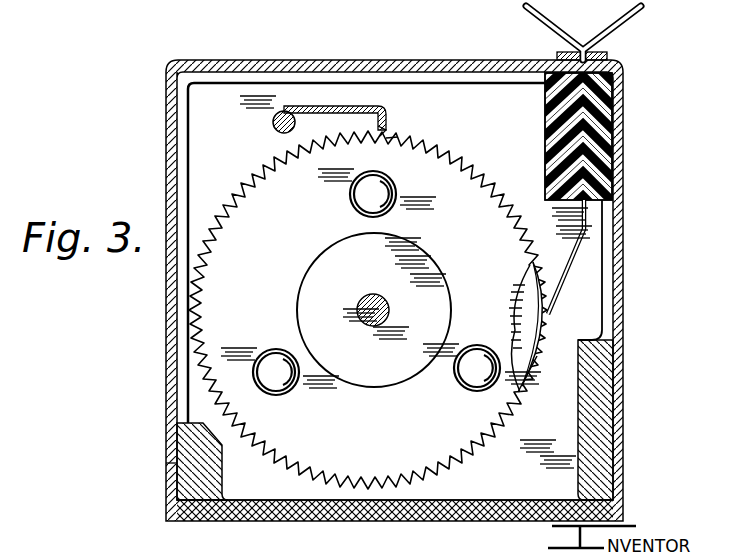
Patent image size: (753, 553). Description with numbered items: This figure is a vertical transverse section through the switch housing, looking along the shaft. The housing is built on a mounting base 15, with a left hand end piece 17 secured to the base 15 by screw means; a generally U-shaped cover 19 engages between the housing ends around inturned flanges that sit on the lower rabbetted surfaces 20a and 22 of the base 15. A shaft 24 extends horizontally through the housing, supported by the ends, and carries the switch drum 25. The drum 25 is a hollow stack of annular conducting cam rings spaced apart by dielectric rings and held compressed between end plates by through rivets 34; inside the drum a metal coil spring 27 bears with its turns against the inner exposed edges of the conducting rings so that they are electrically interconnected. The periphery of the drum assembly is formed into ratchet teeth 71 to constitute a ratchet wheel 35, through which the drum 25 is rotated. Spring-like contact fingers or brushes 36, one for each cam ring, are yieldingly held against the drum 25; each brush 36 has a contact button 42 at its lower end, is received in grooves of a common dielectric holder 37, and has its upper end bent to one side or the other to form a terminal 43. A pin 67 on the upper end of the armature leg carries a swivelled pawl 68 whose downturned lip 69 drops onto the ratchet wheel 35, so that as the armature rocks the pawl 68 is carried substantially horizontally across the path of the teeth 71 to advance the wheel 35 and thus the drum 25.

The mounting base 15 is at (324, 521).
The left hand end piece 17 is at (588, 298).
The cover 19 is at (216, 58).
The lower rabbetted surface 20a is at (177, 440).
The lower rabbetted surface 22 is at (612, 358).
The shaft 24 is at (366, 306).
The switch drum 25 is at (524, 384).
The metal coil spring 27 is at (440, 300).
The through rivets 34 is at (350, 201).
The ratchet wheel 35 is at (466, 178).
The contact fingers 36 is at (570, 262).
The dielectric holder 37 is at (610, 127).
The contact button 42 is at (541, 323).
The terminals 43 is at (534, 28).
The pin 67 is at (274, 126).
The pawl 68 is at (356, 110).
The downturned lip 69 is at (392, 126).
The teeth 71 is at (410, 121).